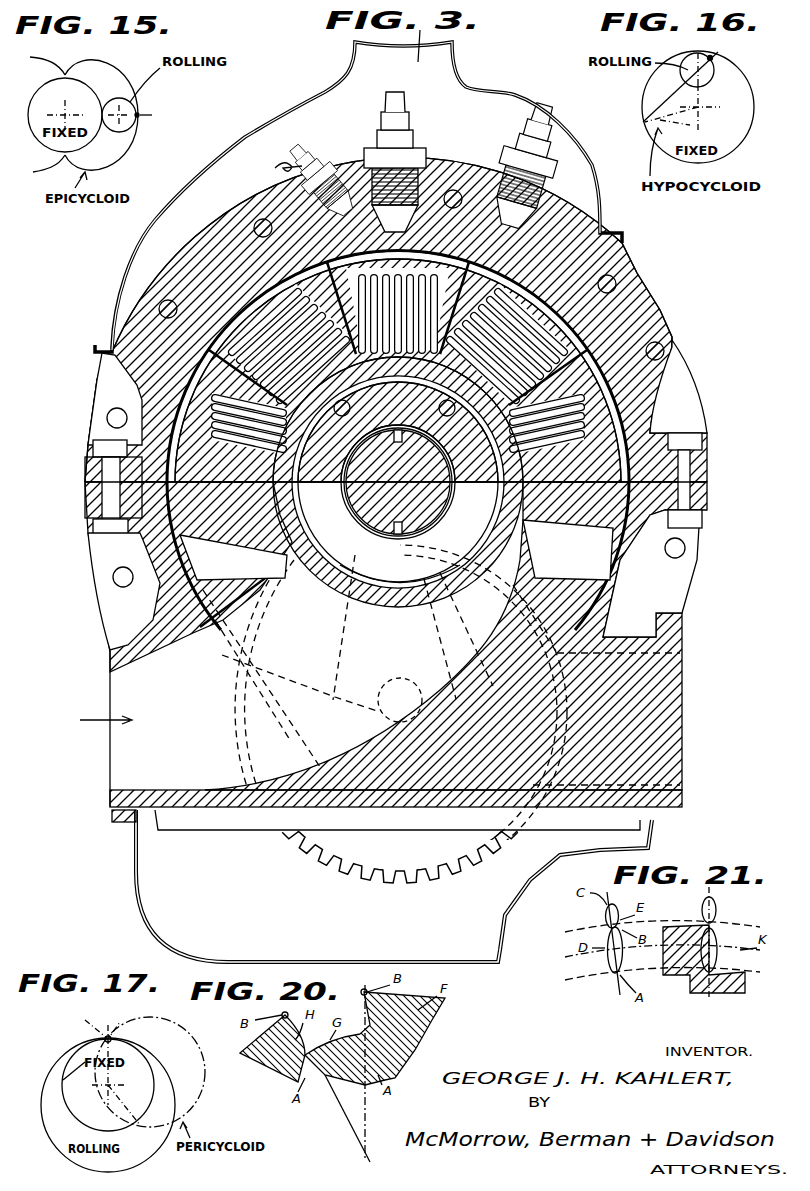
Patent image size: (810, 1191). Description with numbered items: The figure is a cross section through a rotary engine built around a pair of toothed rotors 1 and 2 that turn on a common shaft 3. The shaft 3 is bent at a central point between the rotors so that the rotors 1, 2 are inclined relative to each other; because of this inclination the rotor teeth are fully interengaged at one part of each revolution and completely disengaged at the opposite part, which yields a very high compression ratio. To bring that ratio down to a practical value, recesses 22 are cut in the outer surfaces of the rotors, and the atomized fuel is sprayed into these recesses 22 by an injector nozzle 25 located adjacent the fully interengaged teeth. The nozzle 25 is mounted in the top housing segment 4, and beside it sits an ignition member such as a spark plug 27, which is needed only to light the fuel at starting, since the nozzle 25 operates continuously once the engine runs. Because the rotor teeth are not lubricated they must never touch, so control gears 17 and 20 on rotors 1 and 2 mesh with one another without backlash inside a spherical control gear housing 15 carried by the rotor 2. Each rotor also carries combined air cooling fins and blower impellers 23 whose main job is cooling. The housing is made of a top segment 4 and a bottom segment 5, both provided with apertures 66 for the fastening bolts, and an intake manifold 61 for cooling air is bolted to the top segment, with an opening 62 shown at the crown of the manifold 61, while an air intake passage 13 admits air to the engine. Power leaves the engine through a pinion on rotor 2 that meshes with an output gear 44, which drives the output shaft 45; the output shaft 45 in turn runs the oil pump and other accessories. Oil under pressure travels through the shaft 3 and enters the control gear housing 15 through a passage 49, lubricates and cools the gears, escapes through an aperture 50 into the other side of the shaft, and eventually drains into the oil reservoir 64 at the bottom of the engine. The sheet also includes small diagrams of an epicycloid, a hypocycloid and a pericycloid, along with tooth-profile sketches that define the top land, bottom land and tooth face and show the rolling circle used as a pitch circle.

The toothed rotor 1 is at (200, 360).
The toothed rotor 2 is at (170, 507).
The common shaft 3 is at (333, 595).
The top housing segment 4 is at (435, 185).
The bottom housing segment 5 is at (675, 735).
The air intake passage 13 is at (130, 765).
The spherical control gear housing 15 is at (413, 607).
The control gear 17 is at (440, 590).
The control gear 20 is at (277, 528).
The recesses 22 is at (200, 248).
The combined air cooling fins and blower impellers 23 is at (563, 347).
The injector nozzle 25 is at (400, 180).
The spark plug 27 is at (320, 182).
The output gear 44 is at (435, 850).
The output shaft 45 is at (372, 718).
The passage 49 is at (430, 554).
The aperture 50 is at (377, 530).
The intake manifold 61 is at (525, 95).
The shroud opening 62 is at (397, 62).
The oil reservoir 64 is at (137, 870).
The apertures 66 is at (162, 302).